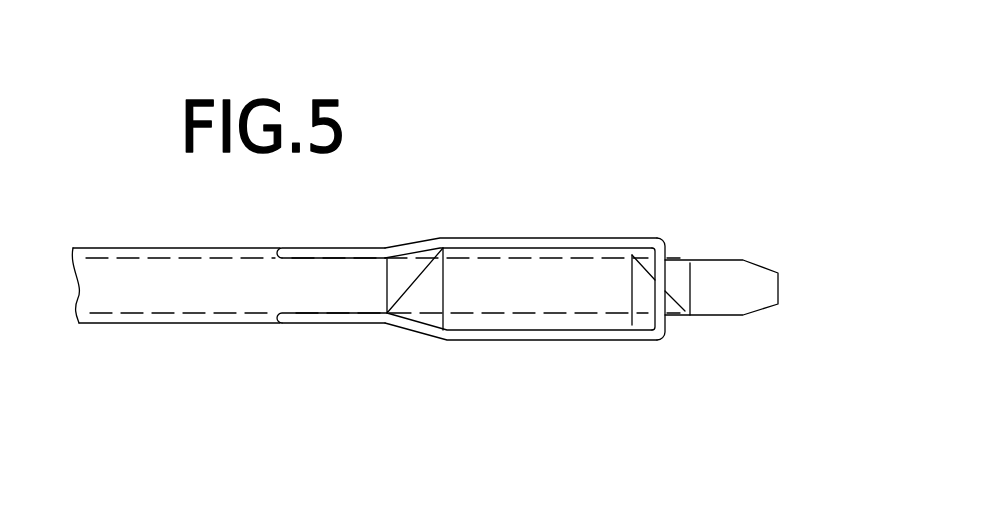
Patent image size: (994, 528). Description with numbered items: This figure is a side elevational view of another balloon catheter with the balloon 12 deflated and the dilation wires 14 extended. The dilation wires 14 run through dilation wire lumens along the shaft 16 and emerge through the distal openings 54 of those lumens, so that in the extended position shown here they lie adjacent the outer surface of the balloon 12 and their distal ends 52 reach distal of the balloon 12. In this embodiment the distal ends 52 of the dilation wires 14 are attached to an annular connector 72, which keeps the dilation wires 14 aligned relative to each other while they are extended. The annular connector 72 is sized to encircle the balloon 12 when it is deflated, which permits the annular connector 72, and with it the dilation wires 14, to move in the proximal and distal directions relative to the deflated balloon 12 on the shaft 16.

The shaft 16 is at (196, 245).
The distal openings of the dilation wire lumens 54 is at (280, 246).
The dilation wires 14 is at (501, 236).
The balloon 12 is at (544, 246).
The distal ends of the dilation wires 52 is at (655, 236).
The annular connector 72 is at (669, 245).